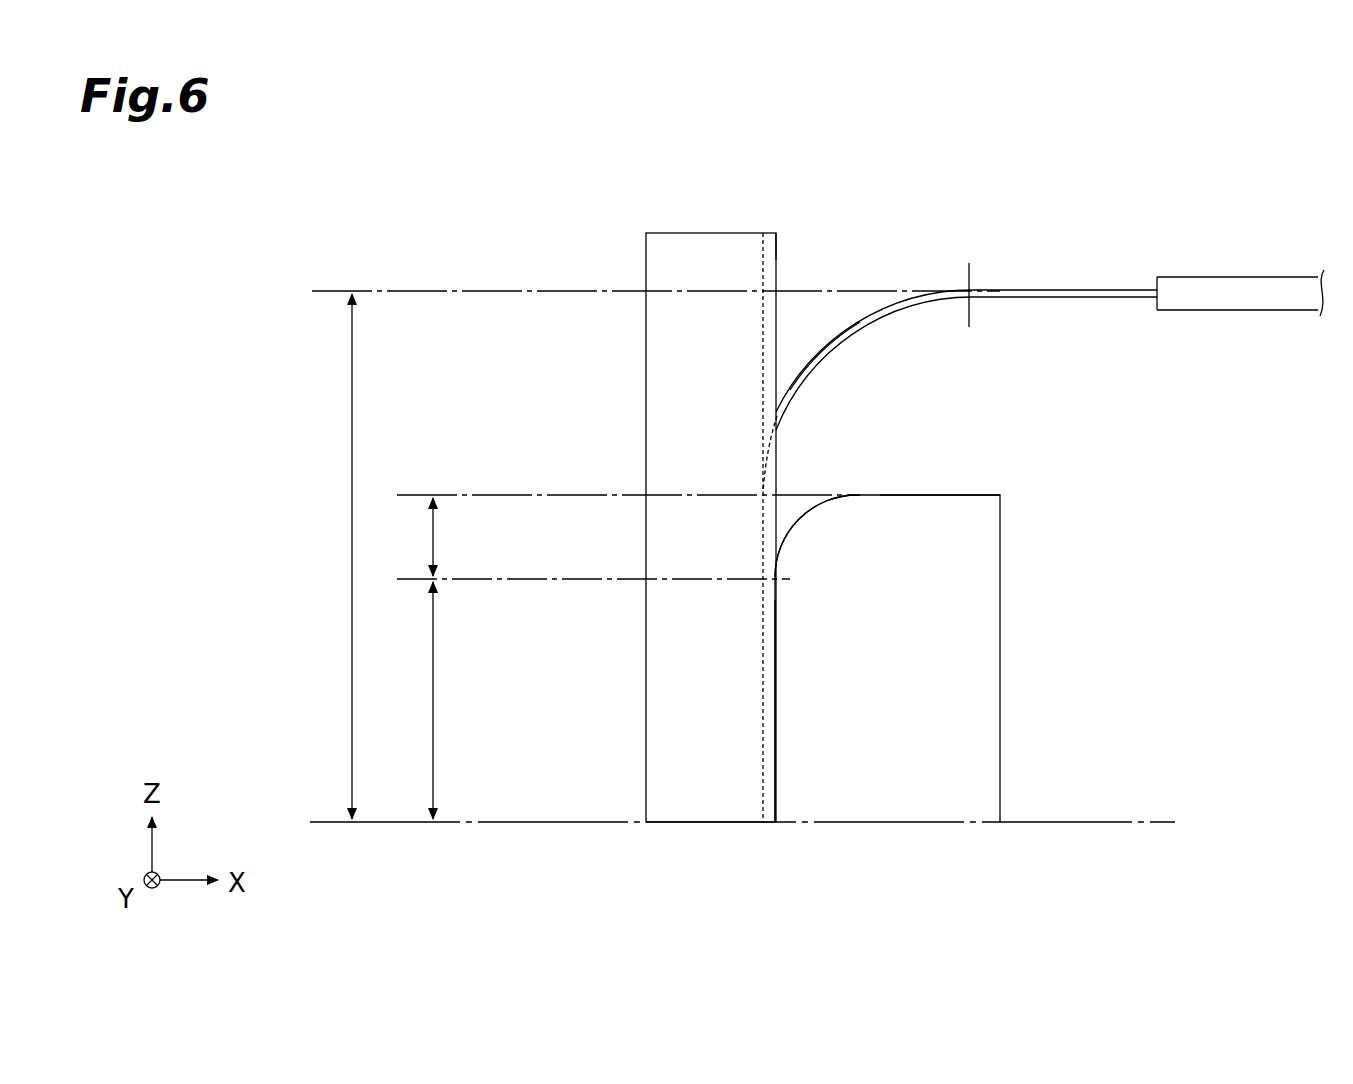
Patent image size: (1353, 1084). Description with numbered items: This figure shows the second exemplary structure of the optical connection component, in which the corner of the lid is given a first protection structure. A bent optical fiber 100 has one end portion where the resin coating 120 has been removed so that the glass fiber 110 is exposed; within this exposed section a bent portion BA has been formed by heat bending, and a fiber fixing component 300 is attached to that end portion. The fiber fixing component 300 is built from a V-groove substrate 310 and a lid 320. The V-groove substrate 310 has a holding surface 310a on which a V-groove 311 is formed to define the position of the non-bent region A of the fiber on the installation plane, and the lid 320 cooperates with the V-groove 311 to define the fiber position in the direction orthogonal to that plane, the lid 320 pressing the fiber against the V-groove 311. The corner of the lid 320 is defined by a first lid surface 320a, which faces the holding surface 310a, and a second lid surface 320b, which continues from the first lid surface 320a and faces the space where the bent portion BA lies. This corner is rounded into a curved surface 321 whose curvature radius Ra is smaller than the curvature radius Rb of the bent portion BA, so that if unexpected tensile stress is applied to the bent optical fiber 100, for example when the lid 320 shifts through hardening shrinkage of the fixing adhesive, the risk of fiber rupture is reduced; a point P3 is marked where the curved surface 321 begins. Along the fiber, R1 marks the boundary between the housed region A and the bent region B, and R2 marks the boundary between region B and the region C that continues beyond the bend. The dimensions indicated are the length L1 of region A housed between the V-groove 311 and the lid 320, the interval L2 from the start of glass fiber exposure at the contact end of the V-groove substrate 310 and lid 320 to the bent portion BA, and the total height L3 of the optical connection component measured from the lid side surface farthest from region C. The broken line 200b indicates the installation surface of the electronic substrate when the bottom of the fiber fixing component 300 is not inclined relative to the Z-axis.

The bent optical fiber 100 is at (1050, 301).
The glass fiber 110 is at (1066, 288).
The resin coating 120 is at (1152, 277).
The broken line indicating installation surface 200b is at (1138, 823).
The fiber fixing component 300 is at (794, 846).
The V-groove substrate 310 is at (657, 688).
The holding surface 310a is at (776, 256).
The V-groove 311 is at (762, 362).
The lid 320 is at (988, 632).
The first lid surface 320a is at (778, 670).
The second lid surface 320b is at (960, 500).
The curved surface 321 is at (820, 510).
The bent portion BA is at (822, 338).
The region C is at (788, 512).
The start point of curved surface P3 is at (786, 583).
The boundary between region A and region B R1 is at (756, 486).
The boundary between region B and region C R2 is at (962, 246).
The curvature radius of the curved surface Ra is at (810, 531).
The curvature radius of the bent portion Rb is at (836, 345).
The length of region A L1 is at (411, 700).
The interval to the bent portion L2 is at (411, 537).
The total height of the optical connection component L3 is at (328, 556).